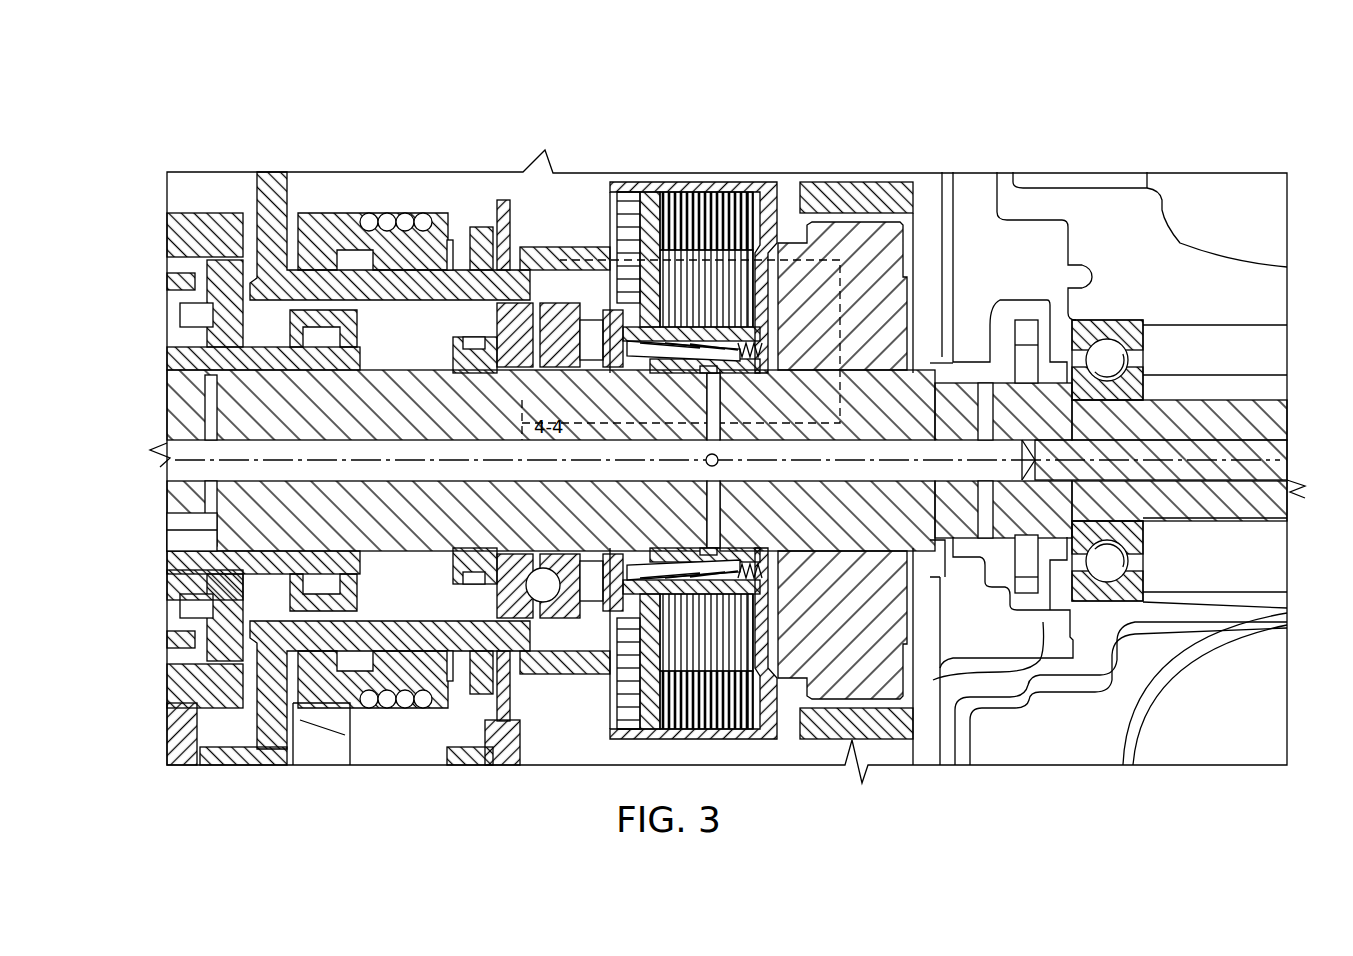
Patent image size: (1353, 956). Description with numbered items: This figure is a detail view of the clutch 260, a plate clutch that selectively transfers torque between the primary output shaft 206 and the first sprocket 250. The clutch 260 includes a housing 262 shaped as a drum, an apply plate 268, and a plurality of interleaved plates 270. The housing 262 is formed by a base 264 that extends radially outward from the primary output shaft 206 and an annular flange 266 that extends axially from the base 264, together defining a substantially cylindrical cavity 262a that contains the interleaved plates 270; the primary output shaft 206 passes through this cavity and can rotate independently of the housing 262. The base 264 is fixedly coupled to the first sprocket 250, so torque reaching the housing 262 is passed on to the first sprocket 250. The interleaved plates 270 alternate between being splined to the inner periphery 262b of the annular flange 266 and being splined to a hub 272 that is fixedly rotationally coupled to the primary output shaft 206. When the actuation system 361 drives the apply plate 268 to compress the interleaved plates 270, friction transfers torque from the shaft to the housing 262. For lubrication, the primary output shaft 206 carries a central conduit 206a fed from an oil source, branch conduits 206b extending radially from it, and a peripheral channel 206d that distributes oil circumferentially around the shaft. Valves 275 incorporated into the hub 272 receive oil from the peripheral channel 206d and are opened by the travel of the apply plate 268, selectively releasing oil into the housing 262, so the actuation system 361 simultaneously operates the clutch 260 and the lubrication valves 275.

The primary output shaft 206 is at (1270, 440).
The central conduit 206a is at (180, 455).
The branch conduits 206b is at (718, 517).
The peripheral channel 206d is at (717, 372).
The first sprocket 250 is at (815, 227).
The clutch 260 is at (628, 92).
The housing 262 is at (683, 185).
The cylindrical cavity 262a is at (627, 198).
The inner periphery 262b is at (612, 228).
The base 264 is at (765, 227).
The annular flange 266 is at (693, 277).
The apply plate 268 is at (629, 268).
The interleaved plates 270 is at (725, 235).
The hub 272 is at (947, 258).
The valves 275 is at (795, 346).
The actuation system 361 is at (488, 140).